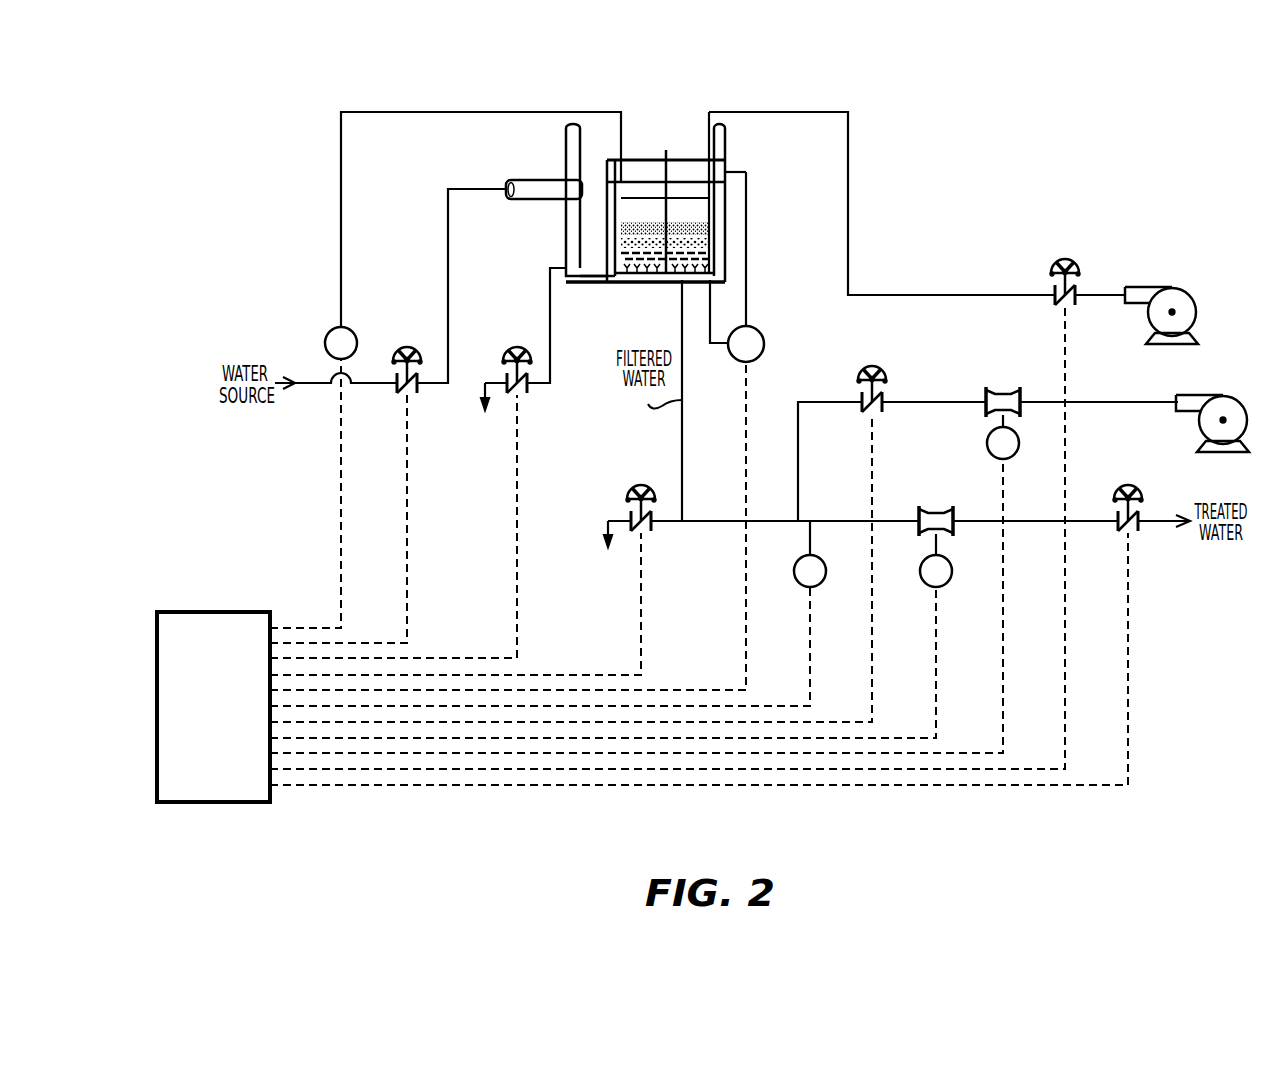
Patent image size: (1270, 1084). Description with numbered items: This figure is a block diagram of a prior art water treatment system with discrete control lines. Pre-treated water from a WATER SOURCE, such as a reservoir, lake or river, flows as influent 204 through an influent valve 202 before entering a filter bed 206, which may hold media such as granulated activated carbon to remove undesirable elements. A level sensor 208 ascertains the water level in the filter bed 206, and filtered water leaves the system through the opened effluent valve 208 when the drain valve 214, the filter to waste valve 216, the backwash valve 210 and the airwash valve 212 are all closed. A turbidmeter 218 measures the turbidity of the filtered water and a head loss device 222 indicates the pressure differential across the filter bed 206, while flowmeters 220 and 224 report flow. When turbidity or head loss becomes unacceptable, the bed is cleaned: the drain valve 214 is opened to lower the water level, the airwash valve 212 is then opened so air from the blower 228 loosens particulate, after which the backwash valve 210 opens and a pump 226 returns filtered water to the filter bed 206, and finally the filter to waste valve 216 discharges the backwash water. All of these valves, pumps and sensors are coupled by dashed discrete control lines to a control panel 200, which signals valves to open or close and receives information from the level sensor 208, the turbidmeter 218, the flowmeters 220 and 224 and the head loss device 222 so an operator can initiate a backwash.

The control panel 200 is at (220, 612).
The influent valve 202 is at (415, 392).
The influent line 204 is at (528, 200).
The filter bed 206 is at (640, 284).
The level sensor 208 is at (357, 330).
The backwash valve 210 is at (880, 368).
The airwash valve 212 is at (1072, 258).
The drain valve 214 is at (525, 392).
The filter to waste valve 216 is at (641, 484).
The turbidmeter 218 is at (824, 563).
The flowmeter 220 is at (936, 507).
The head loss device 222 is at (758, 332).
The flowmeter 224 is at (1004, 388).
The pump 226 is at (1223, 395).
The blower 228 is at (1172, 287).